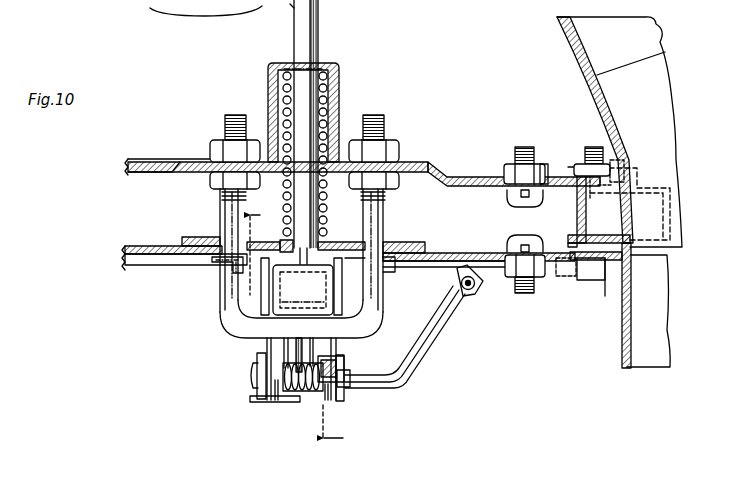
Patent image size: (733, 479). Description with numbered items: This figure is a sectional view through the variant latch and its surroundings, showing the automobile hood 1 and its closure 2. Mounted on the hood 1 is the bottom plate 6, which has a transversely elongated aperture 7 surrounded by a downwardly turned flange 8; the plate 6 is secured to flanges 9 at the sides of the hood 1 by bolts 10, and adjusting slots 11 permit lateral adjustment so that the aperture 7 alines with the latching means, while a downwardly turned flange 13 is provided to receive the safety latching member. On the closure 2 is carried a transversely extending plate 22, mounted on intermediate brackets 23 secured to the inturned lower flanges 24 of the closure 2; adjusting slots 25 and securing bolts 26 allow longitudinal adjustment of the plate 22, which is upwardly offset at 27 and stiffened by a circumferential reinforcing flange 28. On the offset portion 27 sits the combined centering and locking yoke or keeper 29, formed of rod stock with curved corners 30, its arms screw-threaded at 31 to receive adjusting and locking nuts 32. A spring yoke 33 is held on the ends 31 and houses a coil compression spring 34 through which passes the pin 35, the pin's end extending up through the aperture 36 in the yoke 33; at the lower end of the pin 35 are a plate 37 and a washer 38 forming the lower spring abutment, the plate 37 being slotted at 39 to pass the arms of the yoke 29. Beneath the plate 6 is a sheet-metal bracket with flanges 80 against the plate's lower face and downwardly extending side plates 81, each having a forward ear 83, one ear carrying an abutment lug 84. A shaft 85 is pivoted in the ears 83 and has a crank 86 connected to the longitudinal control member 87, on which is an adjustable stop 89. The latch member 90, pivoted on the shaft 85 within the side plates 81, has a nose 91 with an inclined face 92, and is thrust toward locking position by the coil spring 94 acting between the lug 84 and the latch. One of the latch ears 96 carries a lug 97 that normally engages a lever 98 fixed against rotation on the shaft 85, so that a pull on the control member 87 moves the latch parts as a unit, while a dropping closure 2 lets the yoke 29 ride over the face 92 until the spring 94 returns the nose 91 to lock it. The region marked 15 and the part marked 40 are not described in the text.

The automobile hood 1 is at (622, 343).
The closure 2 is at (665, 52).
The bottom plate 6 is at (150, 250).
The transversely elongated aperture 7 is at (352, 268).
The downwardly turned flange 8 is at (212, 268).
The flanges 9 is at (608, 268).
The bolts 10 is at (523, 294).
The adjusting slots 11 is at (537, 278).
The downwardly turned flange 13 is at (558, 276).
The housing 15 is at (206, 8).
The transversely extending plate 22 is at (456, 178).
The intermediate brackets 23 is at (577, 212).
The inturned lower edges or flanges 24 is at (577, 236).
The adjusting slots 25 is at (546, 180).
The securing bolts 26 is at (524, 147).
The upwardly offset portion 27 is at (178, 161).
The circumferential reinforcing flange 28 is at (572, 160).
The centering and locking yoke or keeper 29 is at (228, 291).
The curved or beveled corners 30 is at (227, 327).
The screw-threaded upper ends 31 is at (233, 118).
The adjusting and locking nuts 32 is at (212, 147).
The spring yoke 33 is at (340, 67).
The coil compression spring 34 is at (284, 80).
The pin 35 is at (319, 12).
The aperture 36 is at (286, 64).
The plate 37 is at (332, 243).
The washer 38 is at (282, 241).
The slots 39 is at (226, 238).
The bracket 40 is at (604, 260).
The flanges 80 is at (222, 272).
The side plates 81 is at (266, 286).
The ears 83 is at (267, 356).
The offset lug or abutment portion 84 is at (338, 364).
The shaft 85 is at (374, 386).
The offset or crank portion 86 is at (448, 333).
The control member 87 is at (457, 283).
The adjustable stop 89 is at (478, 289).
The latch member 90 is at (290, 350).
The nose 91 is at (330, 306).
The upward curved or inclined face 92 is at (284, 290).
The coil spring 94 is at (284, 451).
The ears 96 is at (276, 402).
The offset or lug 97 is at (254, 402).
The lever 98 is at (257, 391).